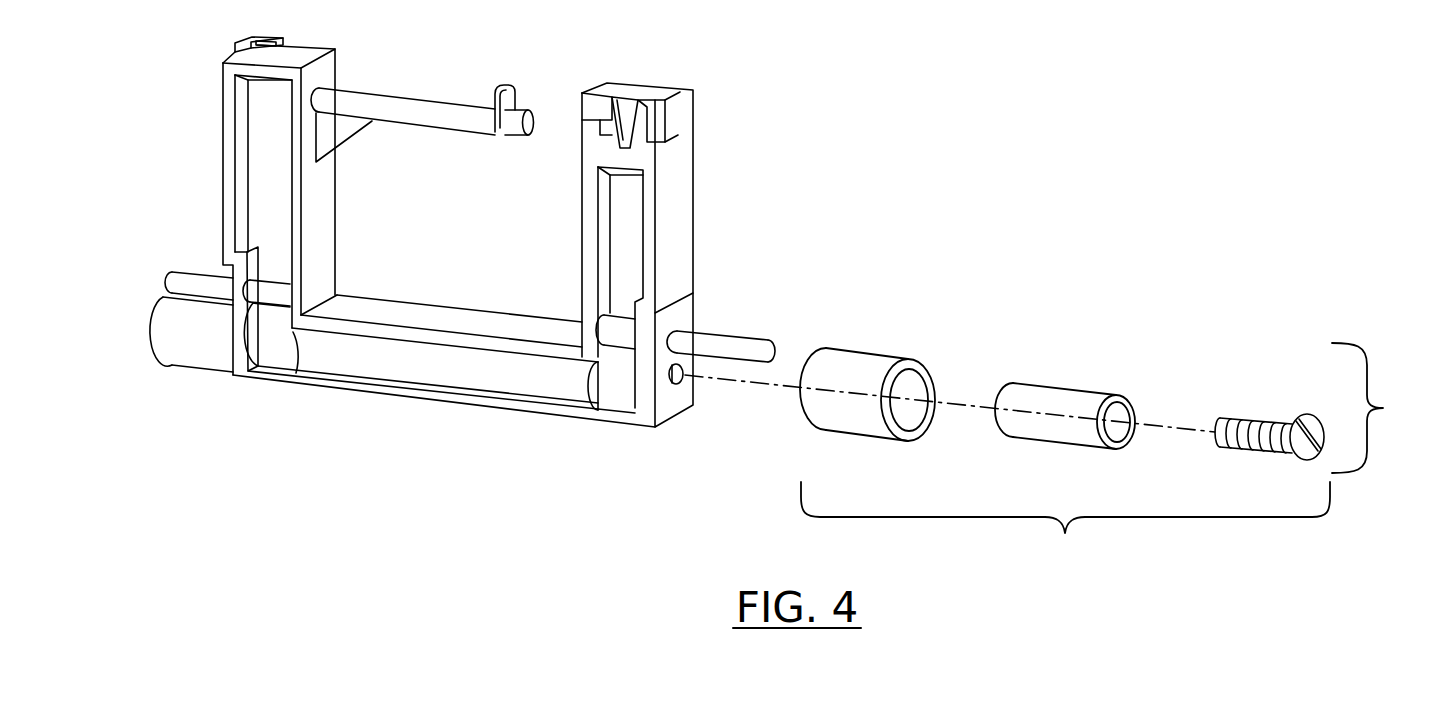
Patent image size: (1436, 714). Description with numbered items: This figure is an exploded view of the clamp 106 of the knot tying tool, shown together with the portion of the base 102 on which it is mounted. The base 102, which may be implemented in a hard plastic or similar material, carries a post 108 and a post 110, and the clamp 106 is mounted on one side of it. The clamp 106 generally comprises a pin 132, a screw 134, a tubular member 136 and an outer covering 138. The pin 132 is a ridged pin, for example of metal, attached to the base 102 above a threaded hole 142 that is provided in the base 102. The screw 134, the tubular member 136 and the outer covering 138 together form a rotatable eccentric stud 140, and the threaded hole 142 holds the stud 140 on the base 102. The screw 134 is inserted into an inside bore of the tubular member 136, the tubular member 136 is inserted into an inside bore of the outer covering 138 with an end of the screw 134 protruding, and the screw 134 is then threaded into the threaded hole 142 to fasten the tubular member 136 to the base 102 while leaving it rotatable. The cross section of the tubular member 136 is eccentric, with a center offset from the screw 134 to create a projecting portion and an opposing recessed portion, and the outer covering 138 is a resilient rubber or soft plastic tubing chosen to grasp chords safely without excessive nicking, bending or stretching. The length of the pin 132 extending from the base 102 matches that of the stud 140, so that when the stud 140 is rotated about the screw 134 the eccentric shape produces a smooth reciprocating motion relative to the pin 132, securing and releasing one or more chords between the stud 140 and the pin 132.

The base 102 is at (412, 404).
The clamp 106 is at (1381, 408).
The post 108 is at (223, 157).
The post 110 is at (697, 183).
The pin 132 is at (733, 335).
The screw 134 is at (1253, 418).
The tubular member 136 is at (1062, 387).
The outer covering 138 is at (868, 350).
The rotatable eccentric stud 140 is at (1065, 524).
The threaded hole 142 is at (688, 391).